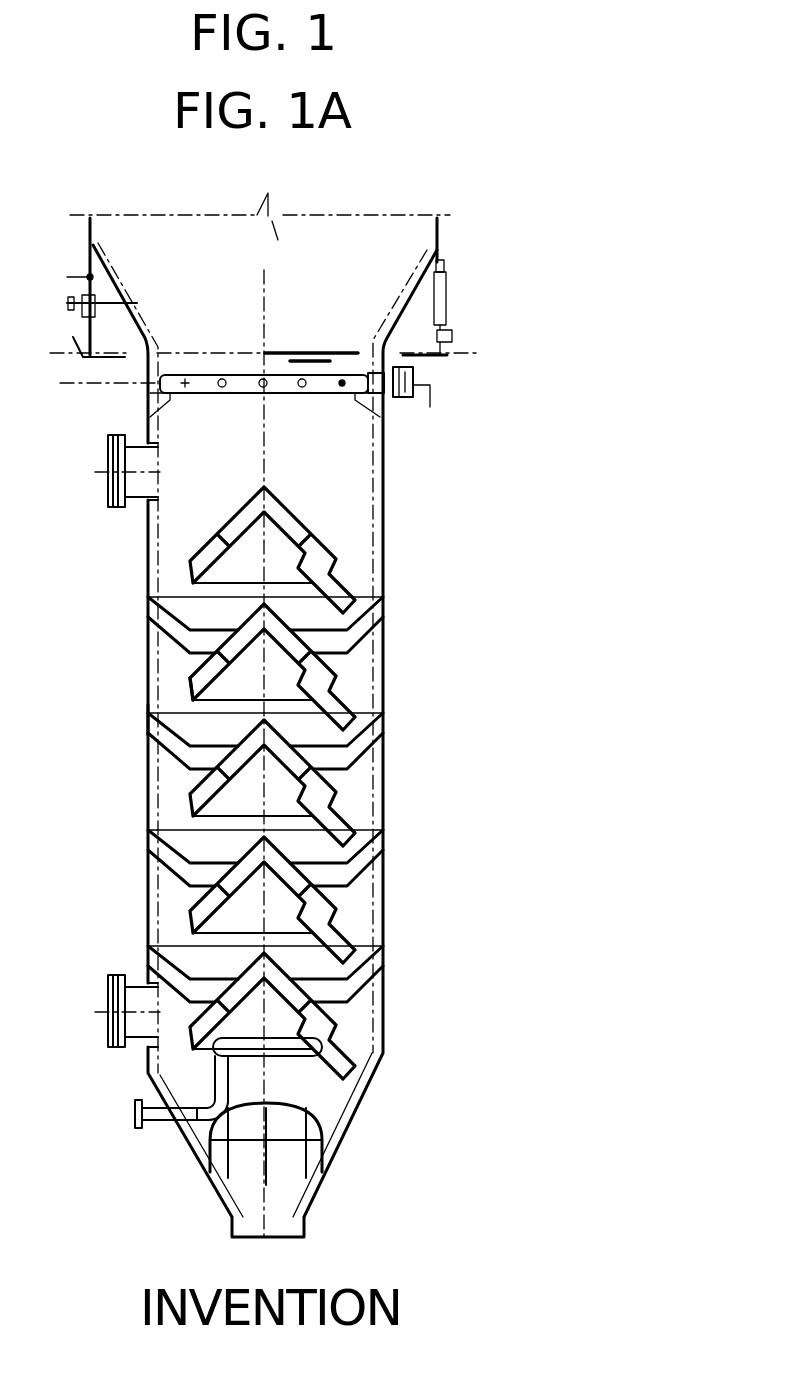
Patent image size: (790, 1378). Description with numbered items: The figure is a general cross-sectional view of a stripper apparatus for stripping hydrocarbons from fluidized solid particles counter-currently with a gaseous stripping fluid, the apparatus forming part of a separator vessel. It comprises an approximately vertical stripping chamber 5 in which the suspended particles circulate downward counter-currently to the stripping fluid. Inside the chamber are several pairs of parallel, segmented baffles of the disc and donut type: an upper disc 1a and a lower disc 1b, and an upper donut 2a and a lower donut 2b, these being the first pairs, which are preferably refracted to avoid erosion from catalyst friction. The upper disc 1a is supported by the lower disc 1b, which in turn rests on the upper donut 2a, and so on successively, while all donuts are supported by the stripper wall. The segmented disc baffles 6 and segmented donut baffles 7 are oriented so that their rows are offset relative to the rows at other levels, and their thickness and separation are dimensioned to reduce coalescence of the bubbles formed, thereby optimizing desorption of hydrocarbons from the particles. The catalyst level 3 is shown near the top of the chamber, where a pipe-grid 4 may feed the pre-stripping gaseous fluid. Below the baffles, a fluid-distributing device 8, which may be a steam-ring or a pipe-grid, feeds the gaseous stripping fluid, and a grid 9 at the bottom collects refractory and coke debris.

The upper disc 1a is at (330, 543).
The lower disc 1b is at (330, 575).
The upper donut 2a is at (370, 608).
The lower donut 2b is at (370, 638).
The catalyst level 3 is at (343, 345).
The pipe-grid 4 is at (438, 385).
The stripping chamber 5 is at (312, 457).
The segmented disc baffles 6 is at (188, 673).
The segmented donut baffles 7 is at (140, 720).
The fluid-distributing device 8 is at (322, 1053).
The grid 9 is at (330, 1128).